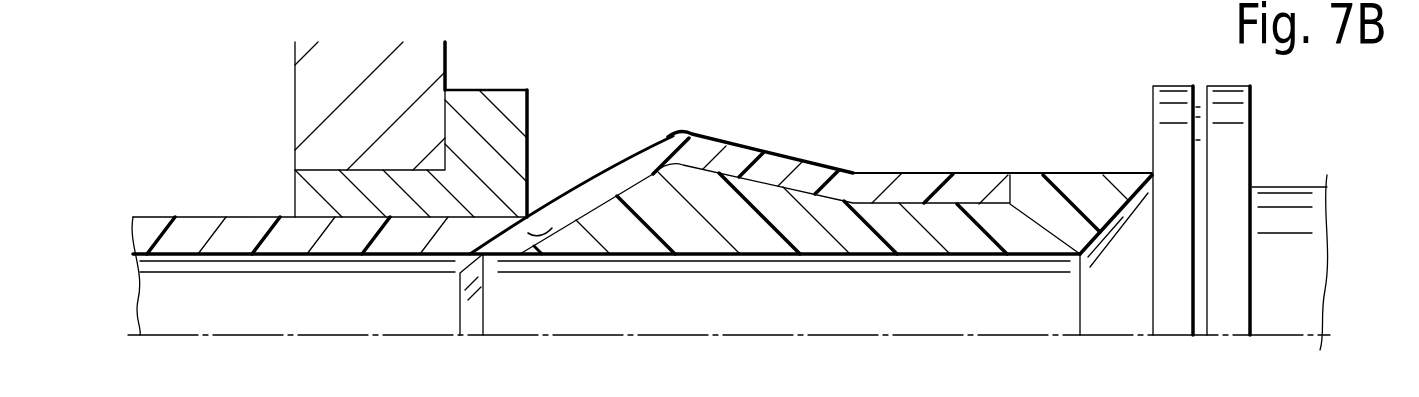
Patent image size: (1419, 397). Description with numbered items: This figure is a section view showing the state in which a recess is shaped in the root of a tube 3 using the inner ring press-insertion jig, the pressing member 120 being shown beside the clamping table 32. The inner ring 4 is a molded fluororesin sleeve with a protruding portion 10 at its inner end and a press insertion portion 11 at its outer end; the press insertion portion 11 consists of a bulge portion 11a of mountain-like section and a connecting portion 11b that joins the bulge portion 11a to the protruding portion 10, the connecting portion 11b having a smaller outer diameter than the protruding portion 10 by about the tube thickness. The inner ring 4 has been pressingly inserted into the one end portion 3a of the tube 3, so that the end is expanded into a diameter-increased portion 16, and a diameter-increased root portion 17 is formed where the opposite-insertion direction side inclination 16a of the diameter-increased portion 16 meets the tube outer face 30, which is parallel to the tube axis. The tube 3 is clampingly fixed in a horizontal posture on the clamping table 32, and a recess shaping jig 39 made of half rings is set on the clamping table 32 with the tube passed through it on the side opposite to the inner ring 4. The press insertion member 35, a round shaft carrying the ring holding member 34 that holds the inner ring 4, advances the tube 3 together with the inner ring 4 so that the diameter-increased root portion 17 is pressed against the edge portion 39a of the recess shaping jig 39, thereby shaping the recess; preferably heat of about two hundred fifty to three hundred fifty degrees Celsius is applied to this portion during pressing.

The tube 3 is at (154, 216).
The one end portion of the tube 3a is at (927, 175).
The inner ring 4 is at (1076, 171).
The protruding portion 10 is at (1067, 230).
The press insertion portion 11 is at (833, 247).
The bulge portion 11a is at (700, 243).
The connecting portion 11b is at (948, 233).
The diameter-increased portion 16 is at (675, 136).
The opposite-insertion direction side inclination 16a is at (600, 168).
The diameter-increased root portion 17 is at (533, 232).
The tube outer face 30 is at (217, 217).
The clamping table 32 is at (295, 87).
The ring holding member 34 is at (460, 291).
The press insertion member 35 is at (1290, 187).
The recess shaping jig 39 is at (517, 90).
The edge portion 39a is at (552, 214).
The pressing member 120 is at (523, 210).